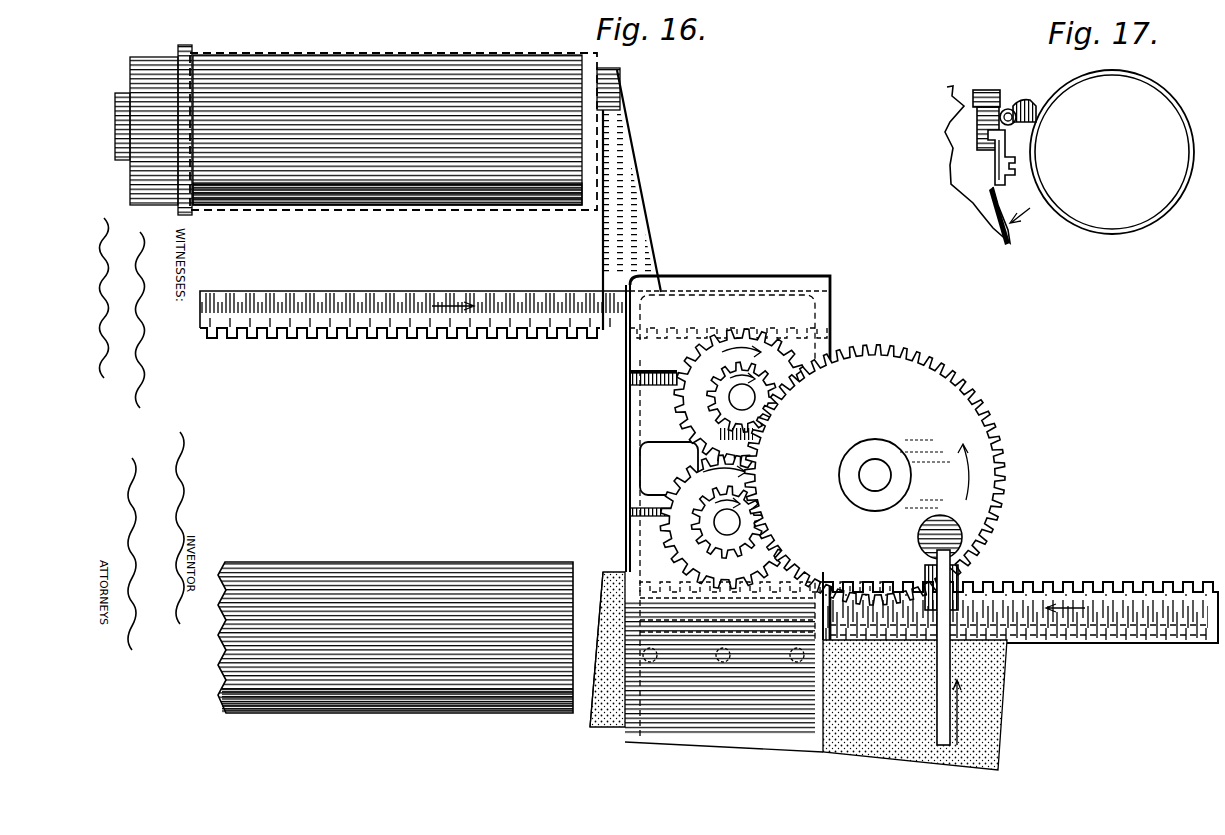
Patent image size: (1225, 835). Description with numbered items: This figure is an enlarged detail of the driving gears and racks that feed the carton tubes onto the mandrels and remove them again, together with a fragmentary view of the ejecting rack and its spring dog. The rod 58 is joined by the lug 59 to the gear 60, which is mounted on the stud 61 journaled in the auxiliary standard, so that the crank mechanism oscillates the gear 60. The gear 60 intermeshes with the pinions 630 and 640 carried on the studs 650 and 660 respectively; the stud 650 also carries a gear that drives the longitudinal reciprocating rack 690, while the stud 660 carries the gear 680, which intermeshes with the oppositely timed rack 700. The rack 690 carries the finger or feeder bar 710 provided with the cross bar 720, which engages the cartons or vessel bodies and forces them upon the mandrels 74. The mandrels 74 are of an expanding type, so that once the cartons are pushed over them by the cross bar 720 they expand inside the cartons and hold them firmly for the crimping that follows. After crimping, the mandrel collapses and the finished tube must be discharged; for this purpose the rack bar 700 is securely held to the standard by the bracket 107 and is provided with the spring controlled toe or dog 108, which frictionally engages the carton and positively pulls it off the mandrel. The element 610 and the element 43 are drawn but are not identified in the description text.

In FIG. 16, the mandrel 74 is at (389, 78).
In FIG. 16, the platen roller 43 is at (585, 53).
In FIG. 17, the platen roller 43 is at (1180, 110).
In FIG. 16, the cross bar 720 is at (619, 78).
In FIG. 16, the finger or feeder bar 710 is at (649, 206).
In FIG. 16, the longitudinal reciprocating rack 690 is at (517, 318).
In FIG. 16, the pinion 630 is at (766, 378).
In FIG. 16, the stud 650 is at (745, 396).
In FIG. 16, the gear support 610 is at (698, 394).
In FIG. 16, the pinion 640 is at (749, 511).
In FIG. 16, the stud 660 is at (736, 525).
In FIG. 16, the gear 680 is at (632, 531).
In FIG. 16, the gear 60 is at (956, 405).
In FIG. 16, the stud 61 is at (876, 468).
In FIG. 16, the lug 59 is at (947, 509).
In FIG. 16, the rack 700 is at (1088, 592).
In FIG. 17, the rack 700 is at (990, 104).
In FIG. 16, the rod 58 is at (1010, 675).
In FIG. 17, the spring controlled toe or dog 108 is at (1040, 97).
In FIG. 17, the bracket 107 is at (1003, 147).